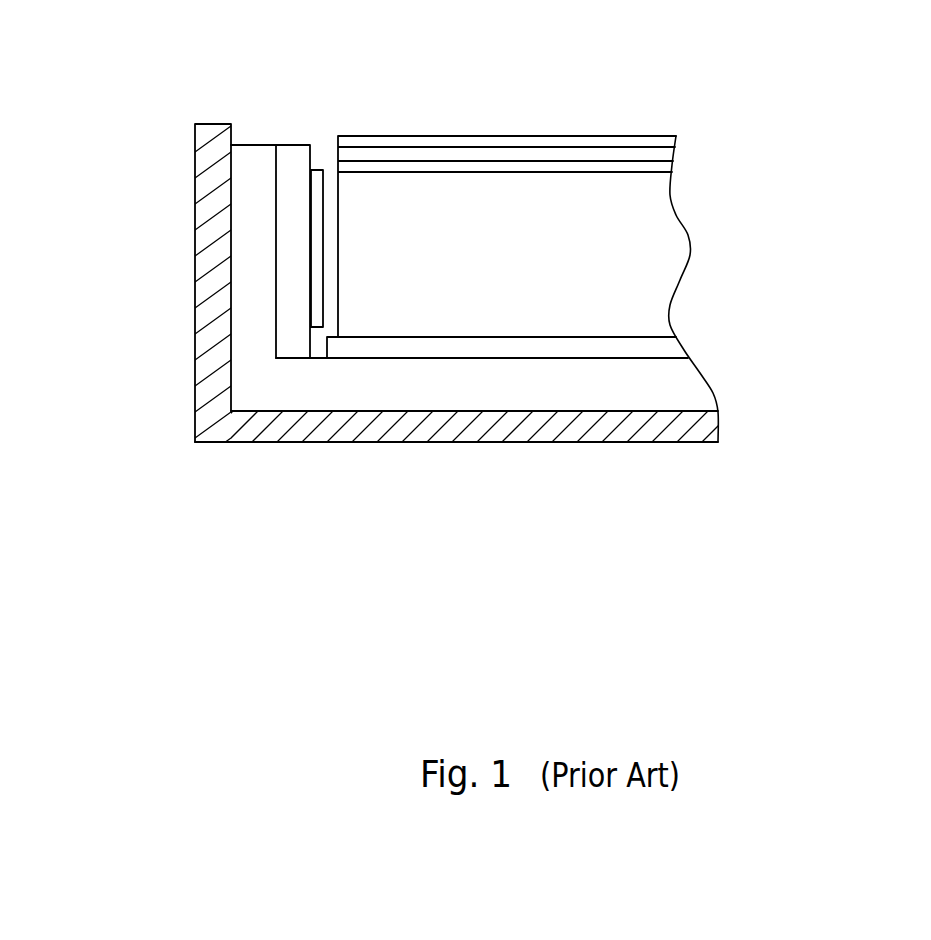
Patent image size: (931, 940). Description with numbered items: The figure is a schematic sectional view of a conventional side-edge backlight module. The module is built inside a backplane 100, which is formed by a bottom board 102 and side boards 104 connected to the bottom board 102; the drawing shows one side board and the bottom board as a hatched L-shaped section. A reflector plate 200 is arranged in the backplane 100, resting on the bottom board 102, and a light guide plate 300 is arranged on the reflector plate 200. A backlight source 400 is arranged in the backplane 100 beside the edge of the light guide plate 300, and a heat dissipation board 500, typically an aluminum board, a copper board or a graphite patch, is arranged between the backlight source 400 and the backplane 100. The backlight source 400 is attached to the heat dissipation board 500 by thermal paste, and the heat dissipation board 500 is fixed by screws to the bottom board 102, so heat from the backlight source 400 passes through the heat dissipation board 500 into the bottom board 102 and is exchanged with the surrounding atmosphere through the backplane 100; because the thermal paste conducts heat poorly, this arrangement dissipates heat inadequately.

The backplane 100 is at (427, 355).
The bottom board 102 is at (373, 427).
The side boards 104 is at (207, 316).
The reflector plate 200 is at (638, 352).
The light guide plate 300 is at (630, 255).
The backlight source 400 is at (293, 208).
The heat dissipation board 500 is at (248, 276).